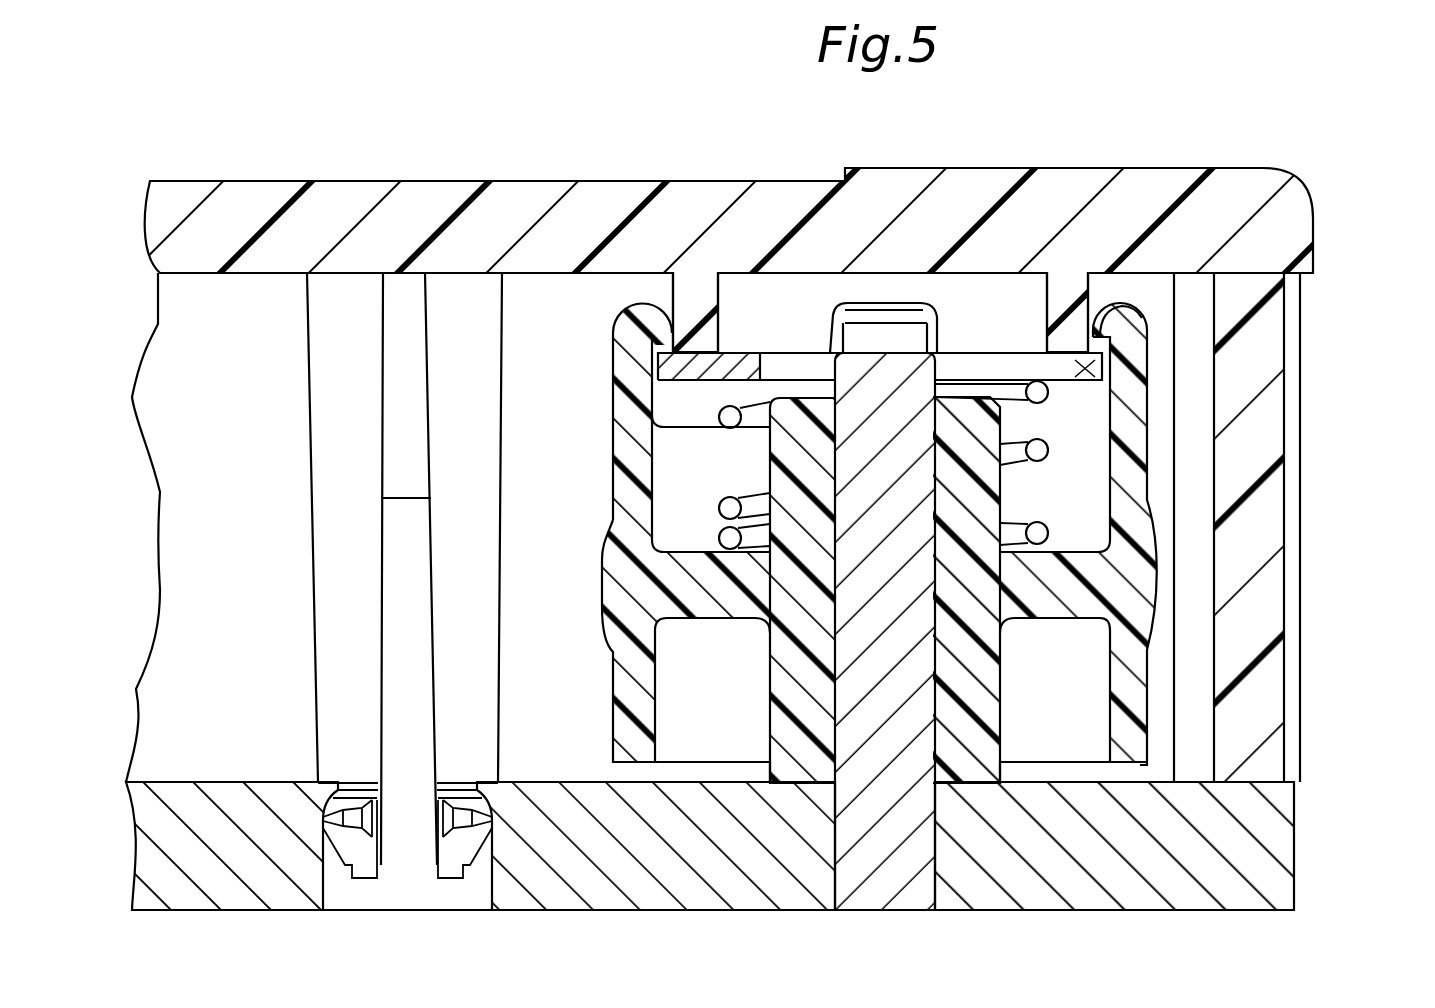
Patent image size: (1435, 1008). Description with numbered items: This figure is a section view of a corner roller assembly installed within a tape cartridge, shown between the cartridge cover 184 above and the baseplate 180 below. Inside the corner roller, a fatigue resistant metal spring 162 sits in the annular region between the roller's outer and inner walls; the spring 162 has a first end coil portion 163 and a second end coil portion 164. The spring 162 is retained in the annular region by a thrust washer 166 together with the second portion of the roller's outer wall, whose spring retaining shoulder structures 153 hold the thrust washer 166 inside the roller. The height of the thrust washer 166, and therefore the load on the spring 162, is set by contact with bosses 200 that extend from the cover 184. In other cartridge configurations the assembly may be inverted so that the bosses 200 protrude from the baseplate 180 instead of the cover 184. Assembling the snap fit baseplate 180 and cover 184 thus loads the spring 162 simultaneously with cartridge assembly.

The cover 184 is at (1147, 195).
The boss 200 is at (1055, 317).
The spring retaining shoulder structure 153 is at (1075, 302).
The thrust washer 166 is at (1113, 387).
The second end coil portion 164 is at (1040, 395).
The fatigue resistant metal spring 162 is at (1037, 455).
The first end coil portion 163 is at (1037, 545).
The baseplate 180 is at (1247, 860).